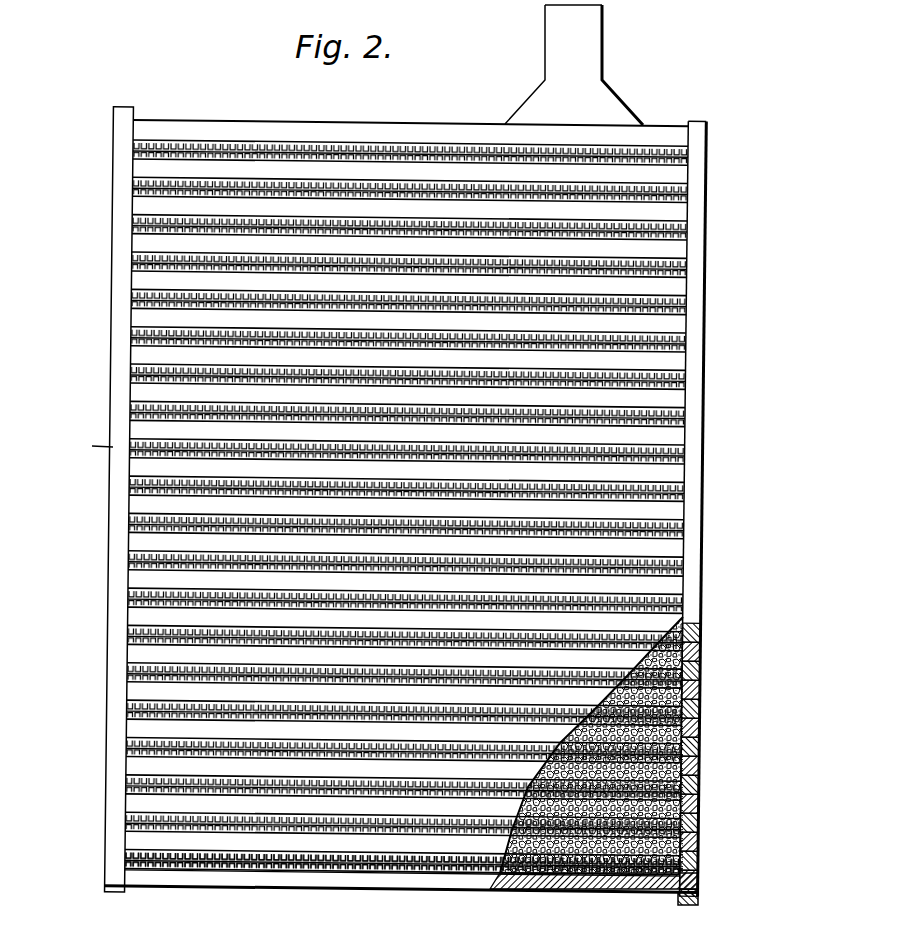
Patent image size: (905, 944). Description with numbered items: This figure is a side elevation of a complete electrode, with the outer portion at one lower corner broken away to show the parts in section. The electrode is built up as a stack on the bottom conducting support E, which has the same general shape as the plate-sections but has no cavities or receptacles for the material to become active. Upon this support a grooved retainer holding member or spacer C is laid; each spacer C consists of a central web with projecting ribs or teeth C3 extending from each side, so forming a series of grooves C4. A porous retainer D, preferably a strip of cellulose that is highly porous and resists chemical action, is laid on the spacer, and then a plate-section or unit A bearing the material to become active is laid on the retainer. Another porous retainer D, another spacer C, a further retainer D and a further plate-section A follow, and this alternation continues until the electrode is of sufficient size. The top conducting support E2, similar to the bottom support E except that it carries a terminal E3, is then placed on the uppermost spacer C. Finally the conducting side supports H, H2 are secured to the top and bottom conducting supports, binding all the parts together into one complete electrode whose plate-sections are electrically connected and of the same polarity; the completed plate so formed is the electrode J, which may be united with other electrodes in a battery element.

The plate-section or unit A is at (677, 255).
The grooved retainer holding member or spacer C is at (662, 152).
The projecting ribs or teeth C3 is at (663, 581).
The grooves C4 is at (663, 575).
The porous retainer D is at (678, 279).
The bottom conducting support E is at (573, 883).
The top conducting support E2 is at (325, 128).
The terminal E3 is at (558, 30).
The conducting side support H is at (697, 337).
The conducting side support H2 is at (113, 380).
The completed plate or electrode J is at (374, 669).